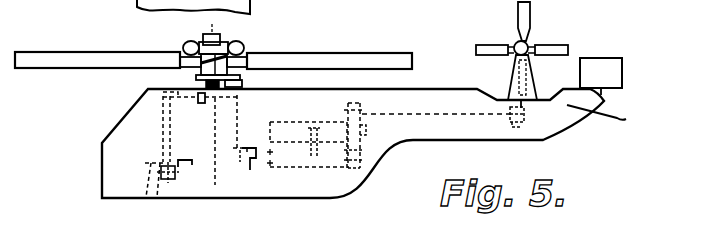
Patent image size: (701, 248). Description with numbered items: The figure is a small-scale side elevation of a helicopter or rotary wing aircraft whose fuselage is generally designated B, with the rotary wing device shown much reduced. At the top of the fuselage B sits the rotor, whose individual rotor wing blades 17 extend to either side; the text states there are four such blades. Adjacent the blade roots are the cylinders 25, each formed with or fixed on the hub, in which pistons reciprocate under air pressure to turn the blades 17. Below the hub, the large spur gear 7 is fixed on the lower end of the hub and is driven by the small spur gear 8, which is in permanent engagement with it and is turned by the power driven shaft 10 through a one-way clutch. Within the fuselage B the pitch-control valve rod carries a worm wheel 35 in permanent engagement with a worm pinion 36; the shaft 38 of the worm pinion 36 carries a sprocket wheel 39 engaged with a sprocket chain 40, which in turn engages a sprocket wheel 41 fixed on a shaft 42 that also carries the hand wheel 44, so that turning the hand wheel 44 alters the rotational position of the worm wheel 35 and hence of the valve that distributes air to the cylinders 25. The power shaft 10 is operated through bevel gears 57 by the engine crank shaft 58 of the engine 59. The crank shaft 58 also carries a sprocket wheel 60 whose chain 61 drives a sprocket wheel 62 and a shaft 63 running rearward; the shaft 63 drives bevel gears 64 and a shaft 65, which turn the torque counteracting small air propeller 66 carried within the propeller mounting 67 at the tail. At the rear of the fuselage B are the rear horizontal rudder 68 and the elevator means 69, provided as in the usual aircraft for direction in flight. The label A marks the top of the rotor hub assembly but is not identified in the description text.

The large spur gear 7 is at (199, 79).
The small spur gear 8 is at (243, 81).
The power driven shaft 10 is at (238, 100).
The rotor wing blades 17 is at (58, 57).
The cylinder 25 is at (190, 42).
The worm wheel 35 is at (218, 116).
The worm pinion 36 is at (222, 108).
The shaft of the worm pinion 38 is at (183, 103).
The sprocket wheel 39 is at (166, 106).
The sprocket chain 40 is at (166, 147).
The sprocket wheel 41 is at (171, 182).
The shaft 42 is at (172, 181).
The hand wheel 44 is at (183, 171).
The bevel gears 57 is at (254, 146).
The engine crank shaft 58 is at (254, 161).
The engine 59 is at (295, 168).
The sprocket wheel 60 is at (362, 160).
The chain 61 is at (360, 133).
The sprocket wheel 62 is at (360, 108).
The shaft 63 is at (421, 118).
The bevel gears 64 is at (516, 118).
The shaft 65 is at (529, 108).
The torque counteracting small air propeller 66 is at (531, 25).
The propeller mounting 67 is at (537, 88).
The rear horizontal rudder 68 is at (613, 78).
The elevator means 69 is at (608, 117).
The rotor hub top A is at (250, 40).
The aircraft fuselage B is at (102, 183).